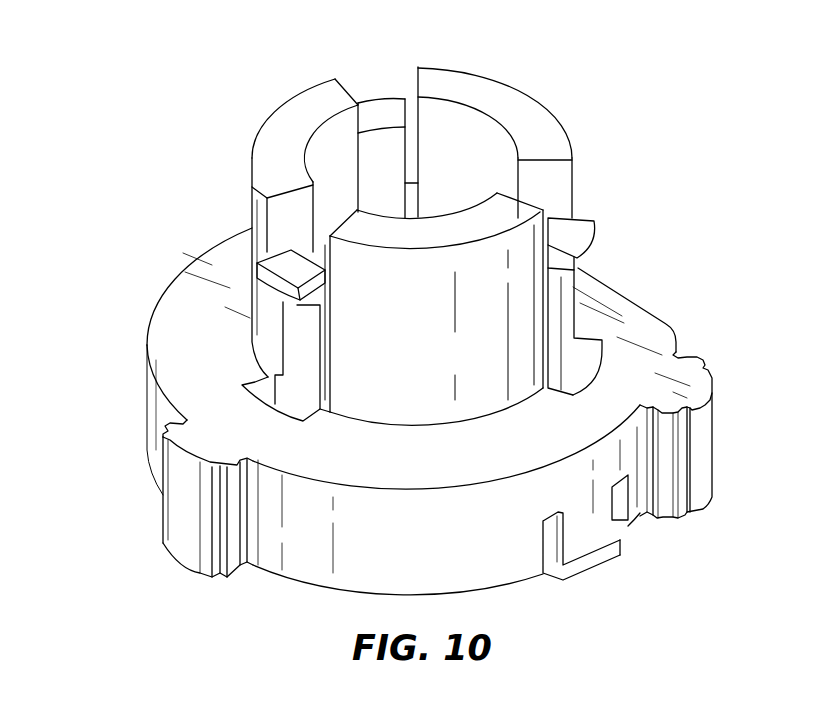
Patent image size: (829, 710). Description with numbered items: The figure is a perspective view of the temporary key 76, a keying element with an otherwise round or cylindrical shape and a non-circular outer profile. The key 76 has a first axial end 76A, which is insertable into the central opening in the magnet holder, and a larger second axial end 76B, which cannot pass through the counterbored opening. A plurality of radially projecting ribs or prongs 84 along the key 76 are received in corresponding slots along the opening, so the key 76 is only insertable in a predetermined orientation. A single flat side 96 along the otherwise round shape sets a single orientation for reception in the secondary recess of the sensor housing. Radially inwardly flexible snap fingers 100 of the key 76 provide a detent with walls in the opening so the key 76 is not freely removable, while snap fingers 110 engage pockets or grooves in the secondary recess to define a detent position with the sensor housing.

The key 76 is at (160, 163).
The first axial end 76A is at (507, 105).
The second axial end 76B is at (520, 583).
The flexible snap fingers 100 is at (378, 110).
The flat side 96 is at (643, 307).
The ribs or prongs 84 is at (698, 427).
The snap fingers 110 is at (605, 548).